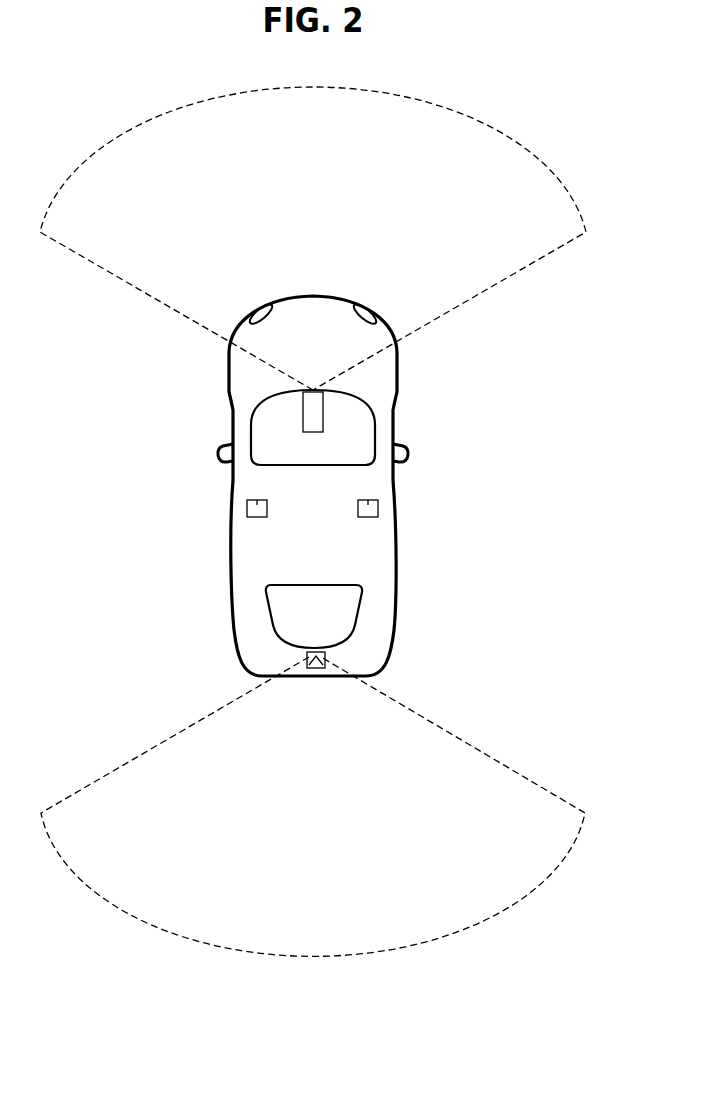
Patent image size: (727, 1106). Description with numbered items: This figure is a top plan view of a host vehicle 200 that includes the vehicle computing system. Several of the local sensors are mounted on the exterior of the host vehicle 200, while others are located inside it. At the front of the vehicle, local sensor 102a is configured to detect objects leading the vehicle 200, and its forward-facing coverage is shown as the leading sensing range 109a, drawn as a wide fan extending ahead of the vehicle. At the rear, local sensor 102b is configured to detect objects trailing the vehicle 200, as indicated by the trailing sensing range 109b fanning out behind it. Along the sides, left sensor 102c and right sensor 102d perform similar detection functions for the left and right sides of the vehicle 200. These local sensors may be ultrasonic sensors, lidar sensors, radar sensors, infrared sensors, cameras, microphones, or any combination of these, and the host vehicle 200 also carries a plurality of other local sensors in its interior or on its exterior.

The host vehicle 200 is at (578, 488).
The local sensor 102a is at (308, 417).
The local sensor 102b is at (315, 668).
The left sensor 102c is at (253, 502).
The right sensor 102d is at (373, 502).
The leading sensing range 109a is at (478, 295).
The trailing sensing range 109b is at (565, 800).